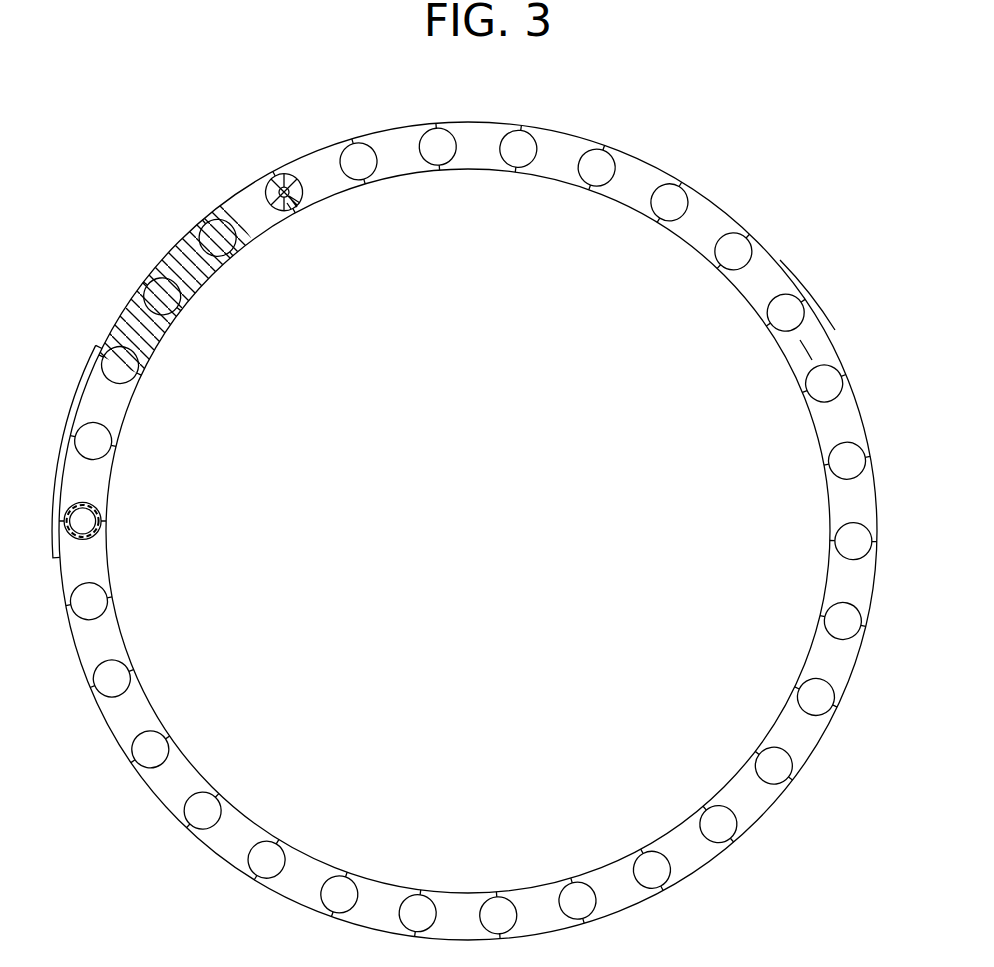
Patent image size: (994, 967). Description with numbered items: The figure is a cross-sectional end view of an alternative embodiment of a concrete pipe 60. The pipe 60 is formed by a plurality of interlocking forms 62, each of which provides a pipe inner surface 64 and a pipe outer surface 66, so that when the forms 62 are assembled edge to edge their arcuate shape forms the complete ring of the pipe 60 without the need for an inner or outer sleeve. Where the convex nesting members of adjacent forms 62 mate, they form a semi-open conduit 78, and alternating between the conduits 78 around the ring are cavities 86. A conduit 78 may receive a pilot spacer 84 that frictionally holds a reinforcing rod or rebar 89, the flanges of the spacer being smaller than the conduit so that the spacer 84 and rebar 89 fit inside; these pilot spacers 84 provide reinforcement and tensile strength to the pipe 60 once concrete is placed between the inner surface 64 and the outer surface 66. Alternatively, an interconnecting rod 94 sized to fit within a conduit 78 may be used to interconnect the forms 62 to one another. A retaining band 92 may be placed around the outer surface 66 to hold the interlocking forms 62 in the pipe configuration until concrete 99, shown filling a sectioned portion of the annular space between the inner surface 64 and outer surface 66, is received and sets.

The pipe 60 is at (473, 519).
The interlocking form 62 is at (786, 261).
The pipe inner surface 64 is at (553, 176).
The pipe outer surface 66 is at (553, 175).
The semi-open conduit 78 is at (789, 313).
The pilot spacer 84 is at (283, 207).
The cavity 86 is at (807, 348).
The reinforcing rod or rebar 89 is at (300, 203).
The retaining band 92 is at (83, 367).
The interconnecting rod 94 is at (83, 521).
The concrete 99 is at (187, 270).